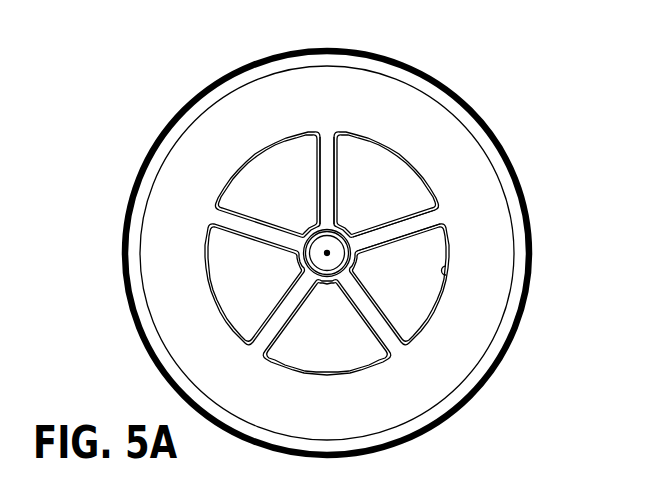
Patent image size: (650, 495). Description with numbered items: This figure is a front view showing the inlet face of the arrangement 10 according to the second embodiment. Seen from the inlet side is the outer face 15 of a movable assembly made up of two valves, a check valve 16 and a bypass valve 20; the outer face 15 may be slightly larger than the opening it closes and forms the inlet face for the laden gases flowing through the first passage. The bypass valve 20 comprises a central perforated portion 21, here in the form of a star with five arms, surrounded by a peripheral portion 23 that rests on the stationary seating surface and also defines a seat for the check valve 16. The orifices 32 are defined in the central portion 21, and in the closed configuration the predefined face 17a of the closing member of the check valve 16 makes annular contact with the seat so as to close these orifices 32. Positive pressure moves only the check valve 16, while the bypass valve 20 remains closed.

The arrangement 10 is at (118, 128).
The outer face 15 is at (452, 135).
The check valve 16 is at (389, 200).
The predefined face 17a is at (413, 203).
The bypass valve 20 is at (476, 403).
The central perforated portion 21 is at (337, 170).
The peripheral portion 23 is at (437, 302).
The orifices 32 is at (446, 262).